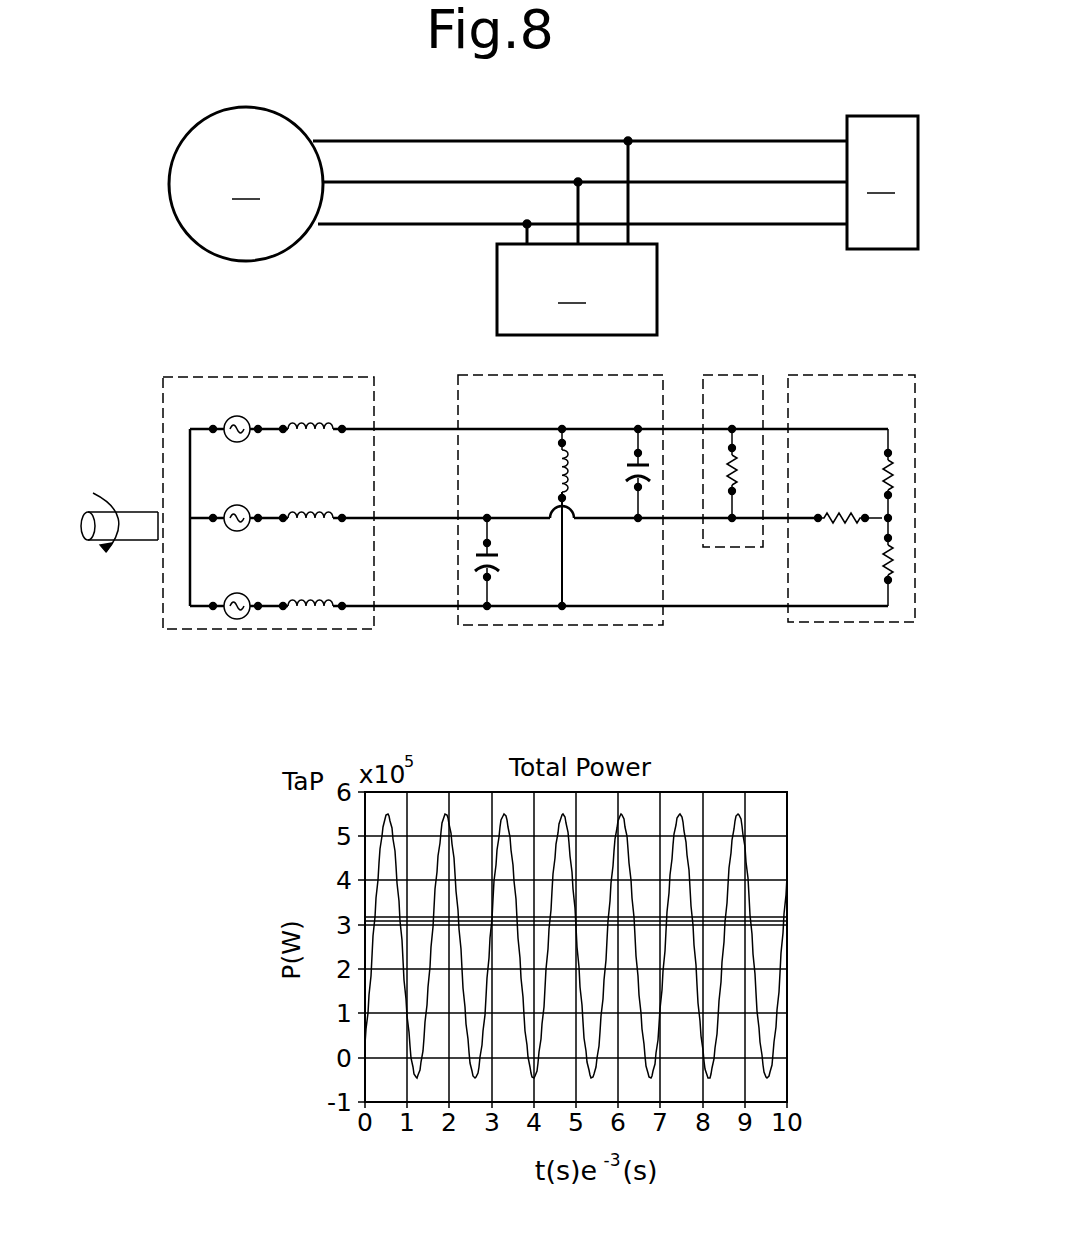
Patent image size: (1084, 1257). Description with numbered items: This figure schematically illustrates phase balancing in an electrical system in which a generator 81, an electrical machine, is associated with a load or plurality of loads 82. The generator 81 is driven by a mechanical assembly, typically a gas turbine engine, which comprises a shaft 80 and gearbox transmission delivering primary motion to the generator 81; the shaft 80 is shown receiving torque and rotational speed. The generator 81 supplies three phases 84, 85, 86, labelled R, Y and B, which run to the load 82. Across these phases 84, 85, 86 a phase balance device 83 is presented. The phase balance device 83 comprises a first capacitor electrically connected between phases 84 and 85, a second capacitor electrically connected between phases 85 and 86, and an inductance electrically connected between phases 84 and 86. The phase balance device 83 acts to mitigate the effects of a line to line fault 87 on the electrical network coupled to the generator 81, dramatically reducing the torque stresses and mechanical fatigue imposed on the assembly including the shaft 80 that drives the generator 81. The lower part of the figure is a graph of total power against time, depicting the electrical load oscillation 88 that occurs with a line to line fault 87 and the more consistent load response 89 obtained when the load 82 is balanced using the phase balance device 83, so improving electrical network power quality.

The shaft 80 is at (140, 530).
The generator 81 is at (350, 389).
The load 82 is at (884, 390).
The phase balance device 83 is at (643, 390).
The phase 84 is at (473, 140).
The phase 85 is at (481, 182).
The phase 86 is at (478, 224).
The line to line fault 87 is at (742, 383).
The electrical load oscillation 88 is at (748, 828).
The consistent load response 89 is at (767, 912).